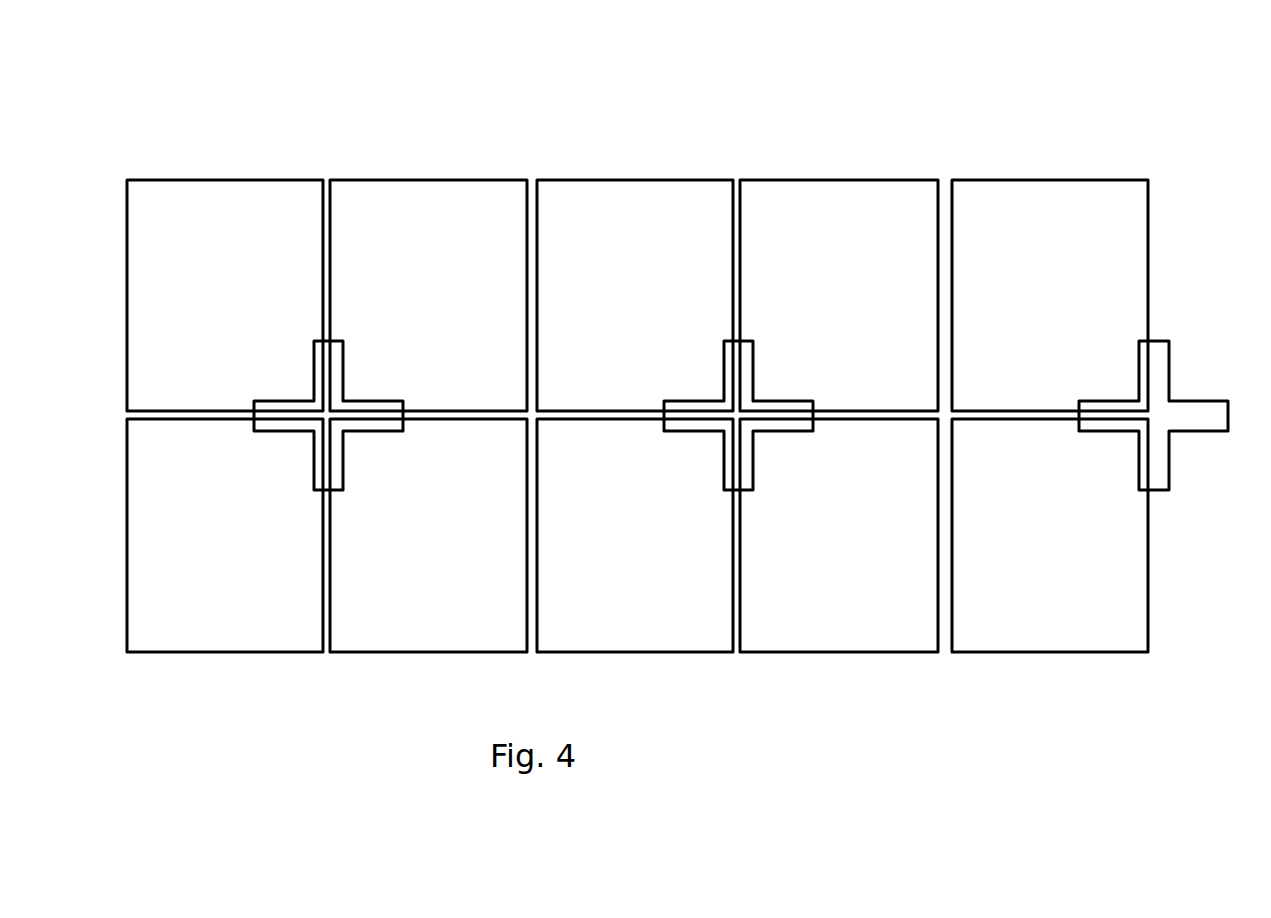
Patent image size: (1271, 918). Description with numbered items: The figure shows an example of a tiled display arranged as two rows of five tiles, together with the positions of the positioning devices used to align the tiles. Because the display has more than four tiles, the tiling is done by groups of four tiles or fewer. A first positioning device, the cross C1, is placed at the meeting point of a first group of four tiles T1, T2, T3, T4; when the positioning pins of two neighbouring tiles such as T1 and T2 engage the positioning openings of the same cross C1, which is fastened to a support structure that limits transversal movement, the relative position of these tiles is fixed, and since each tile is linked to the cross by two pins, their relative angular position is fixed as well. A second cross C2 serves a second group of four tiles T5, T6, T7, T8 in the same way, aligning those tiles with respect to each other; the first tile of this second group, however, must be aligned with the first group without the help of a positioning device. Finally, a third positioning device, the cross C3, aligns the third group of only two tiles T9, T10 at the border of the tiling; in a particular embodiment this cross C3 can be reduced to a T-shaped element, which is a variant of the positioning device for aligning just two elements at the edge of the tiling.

The tile T1 is at (225, 295).
The tile T2 is at (428, 295).
The tile T3 is at (225, 535).
The tile T4 is at (428, 535).
The tile T5 is at (635, 295).
The tile T6 is at (839, 295).
The tile T7 is at (635, 535).
The tile T8 is at (839, 535).
The tile T9 is at (1050, 295).
The tile T10 is at (1050, 535).
The cross C1 is at (307, 341).
The cross C2 is at (710, 342).
The cross C3 is at (1127, 327).